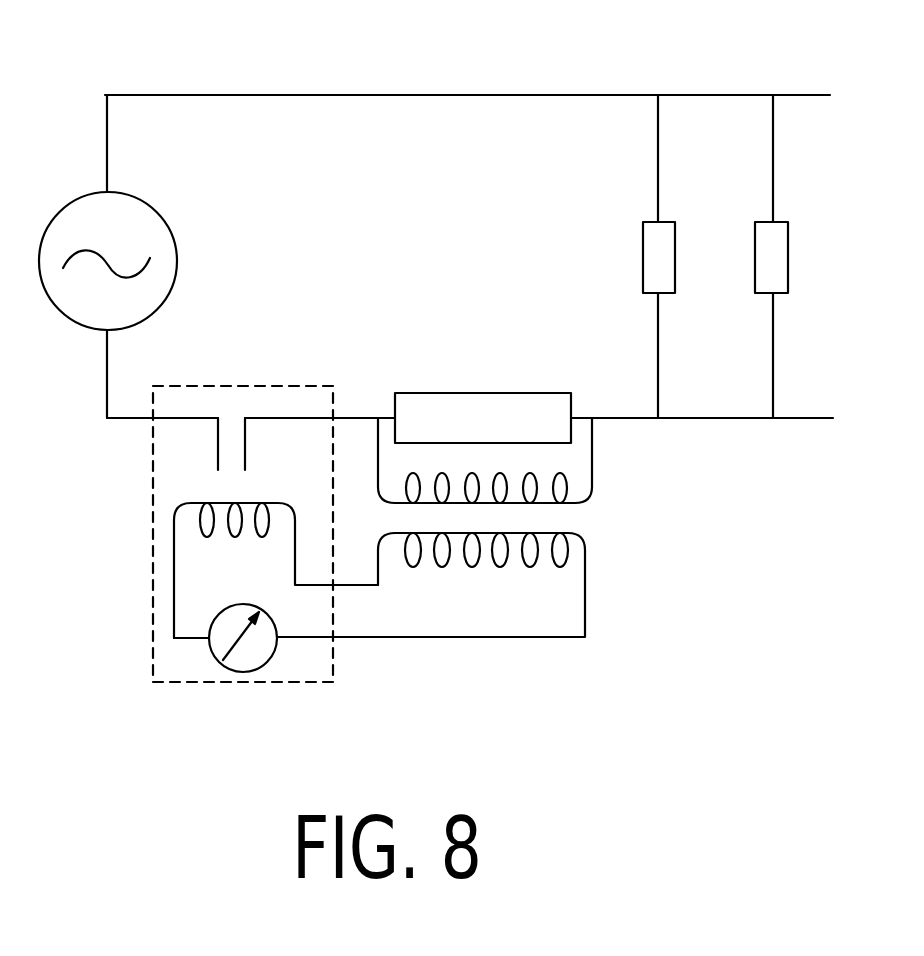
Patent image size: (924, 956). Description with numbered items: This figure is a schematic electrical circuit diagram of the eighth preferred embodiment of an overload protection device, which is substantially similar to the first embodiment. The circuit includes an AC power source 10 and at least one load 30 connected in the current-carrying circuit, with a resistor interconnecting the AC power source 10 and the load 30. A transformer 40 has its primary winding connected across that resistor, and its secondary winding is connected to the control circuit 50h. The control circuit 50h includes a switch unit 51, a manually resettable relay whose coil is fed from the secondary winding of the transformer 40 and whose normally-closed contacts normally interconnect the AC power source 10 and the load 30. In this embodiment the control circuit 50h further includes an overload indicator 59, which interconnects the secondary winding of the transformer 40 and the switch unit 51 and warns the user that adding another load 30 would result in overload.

The AC power source 10 is at (177, 243).
The load 30 is at (670, 222).
The transformer 40 is at (568, 514).
The control circuit 50h is at (153, 535).
The switch unit 51 is at (212, 468).
The overload indicator 59 is at (220, 667).